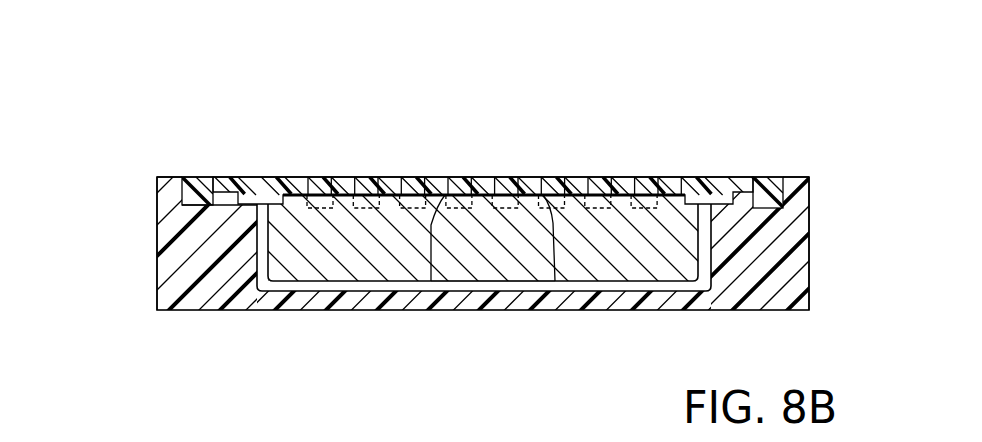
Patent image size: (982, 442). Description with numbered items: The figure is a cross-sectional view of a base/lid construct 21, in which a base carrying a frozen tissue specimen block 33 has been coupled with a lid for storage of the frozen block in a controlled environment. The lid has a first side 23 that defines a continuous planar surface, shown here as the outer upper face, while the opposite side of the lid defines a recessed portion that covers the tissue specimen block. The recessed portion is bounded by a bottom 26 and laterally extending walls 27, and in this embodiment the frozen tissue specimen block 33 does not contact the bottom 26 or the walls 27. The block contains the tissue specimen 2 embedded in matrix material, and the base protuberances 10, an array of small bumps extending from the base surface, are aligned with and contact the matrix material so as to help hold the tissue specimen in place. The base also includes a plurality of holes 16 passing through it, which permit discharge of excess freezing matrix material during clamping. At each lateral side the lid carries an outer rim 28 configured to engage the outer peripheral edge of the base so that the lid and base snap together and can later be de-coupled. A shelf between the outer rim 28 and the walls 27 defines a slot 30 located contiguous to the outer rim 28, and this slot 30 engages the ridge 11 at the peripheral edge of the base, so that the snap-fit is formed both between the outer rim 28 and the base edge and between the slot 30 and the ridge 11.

The tissue specimen 2 is at (472, 227).
The protuberances 10 is at (297, 195).
The ridge 11 is at (161, 201).
The holes 16 is at (609, 197).
The base/lid construct 21 is at (110, 243).
The first side 23 is at (393, 307).
The bottom 26 is at (375, 281).
The laterally extending walls 27 is at (242, 260).
The outer rim 28 is at (147, 176).
The slot 30 is at (147, 205).
The frozen tissue specimen block 33 is at (362, 230).